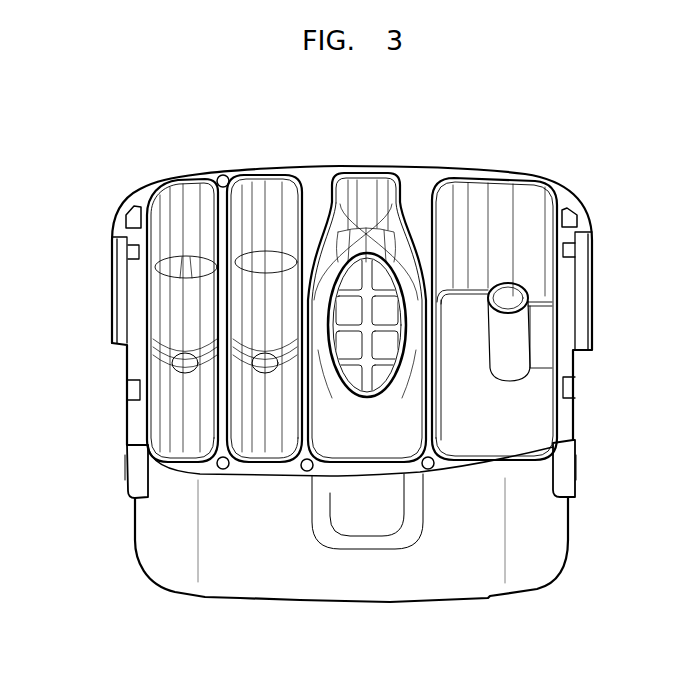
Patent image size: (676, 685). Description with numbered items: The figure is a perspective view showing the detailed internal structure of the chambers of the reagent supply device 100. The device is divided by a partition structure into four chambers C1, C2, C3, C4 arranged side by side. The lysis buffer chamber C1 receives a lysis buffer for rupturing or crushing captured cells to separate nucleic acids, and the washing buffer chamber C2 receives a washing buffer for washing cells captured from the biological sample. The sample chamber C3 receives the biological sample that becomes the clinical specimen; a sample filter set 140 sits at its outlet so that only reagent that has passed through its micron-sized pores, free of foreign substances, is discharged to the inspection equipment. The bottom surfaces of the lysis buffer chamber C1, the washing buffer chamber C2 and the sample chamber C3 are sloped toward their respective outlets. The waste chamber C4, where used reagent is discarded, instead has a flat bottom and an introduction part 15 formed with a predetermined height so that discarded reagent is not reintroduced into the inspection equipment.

The reagent supply device 100 is at (93, 219).
The lysis buffer chamber C1 is at (179, 196).
The washing buffer chamber C2 is at (268, 192).
The sample chamber C3 is at (362, 190).
The waste chamber C4 is at (533, 294).
The introduction part 15 is at (531, 285).
The sample filter set 140 is at (377, 390).